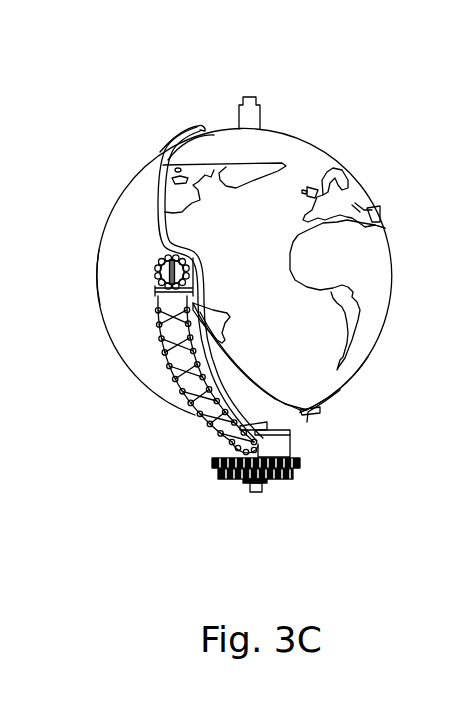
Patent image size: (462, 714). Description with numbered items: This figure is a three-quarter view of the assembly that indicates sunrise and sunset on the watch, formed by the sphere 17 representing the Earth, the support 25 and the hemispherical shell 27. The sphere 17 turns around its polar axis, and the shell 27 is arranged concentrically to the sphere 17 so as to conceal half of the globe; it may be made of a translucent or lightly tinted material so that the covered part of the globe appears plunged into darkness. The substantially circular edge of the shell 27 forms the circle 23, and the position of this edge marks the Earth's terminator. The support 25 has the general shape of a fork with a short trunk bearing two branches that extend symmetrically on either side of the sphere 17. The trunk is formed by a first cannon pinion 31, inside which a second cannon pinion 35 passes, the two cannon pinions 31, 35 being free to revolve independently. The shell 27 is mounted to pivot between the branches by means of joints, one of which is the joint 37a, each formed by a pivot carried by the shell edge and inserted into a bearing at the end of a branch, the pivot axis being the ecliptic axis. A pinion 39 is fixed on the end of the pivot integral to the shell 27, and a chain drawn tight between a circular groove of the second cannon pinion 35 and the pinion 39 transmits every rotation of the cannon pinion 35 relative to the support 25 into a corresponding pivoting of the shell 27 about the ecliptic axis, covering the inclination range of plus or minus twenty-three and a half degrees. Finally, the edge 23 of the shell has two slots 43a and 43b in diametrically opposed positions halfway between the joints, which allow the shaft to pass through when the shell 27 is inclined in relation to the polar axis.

The sphere 17 is at (325, 146).
The circle 23 is at (162, 146).
The support 25 is at (295, 438).
The hemispherical shell 27 is at (112, 250).
The first cannon pinion 31 is at (298, 467).
The second cannon pinion 35 is at (221, 480).
The joint 37a is at (155, 253).
The pinion 39 is at (156, 286).
The slot 43a is at (197, 128).
The slot 43b is at (330, 408).